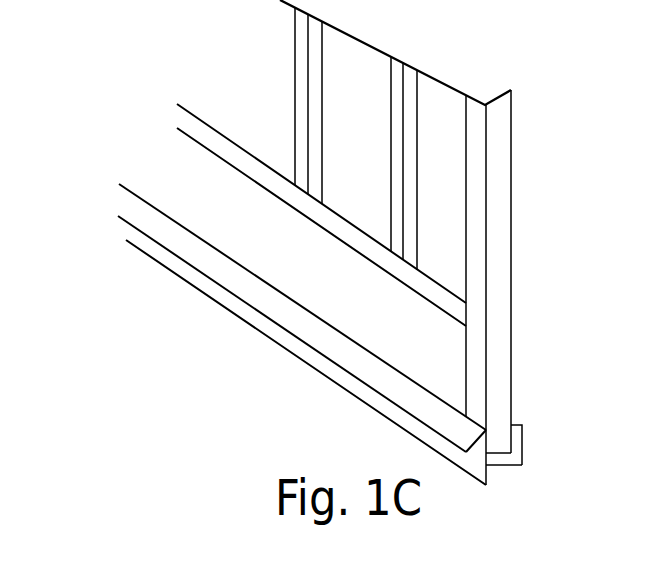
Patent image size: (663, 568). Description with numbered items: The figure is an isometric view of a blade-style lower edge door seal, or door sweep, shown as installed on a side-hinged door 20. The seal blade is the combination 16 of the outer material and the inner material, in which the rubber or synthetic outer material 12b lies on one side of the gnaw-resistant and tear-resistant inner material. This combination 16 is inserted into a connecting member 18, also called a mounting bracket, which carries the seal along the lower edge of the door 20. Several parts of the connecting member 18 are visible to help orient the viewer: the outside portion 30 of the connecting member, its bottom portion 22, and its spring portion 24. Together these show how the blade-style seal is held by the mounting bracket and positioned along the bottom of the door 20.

The outer material 12b is at (175, 263).
The combination of outer material and inner material 16 is at (310, 370).
The connecting member 18 is at (522, 445).
The door 20 is at (500, 325).
The bottom portion 22 is at (501, 465).
The spring portion 24 is at (522, 465).
The outside portion 30 is at (240, 280).